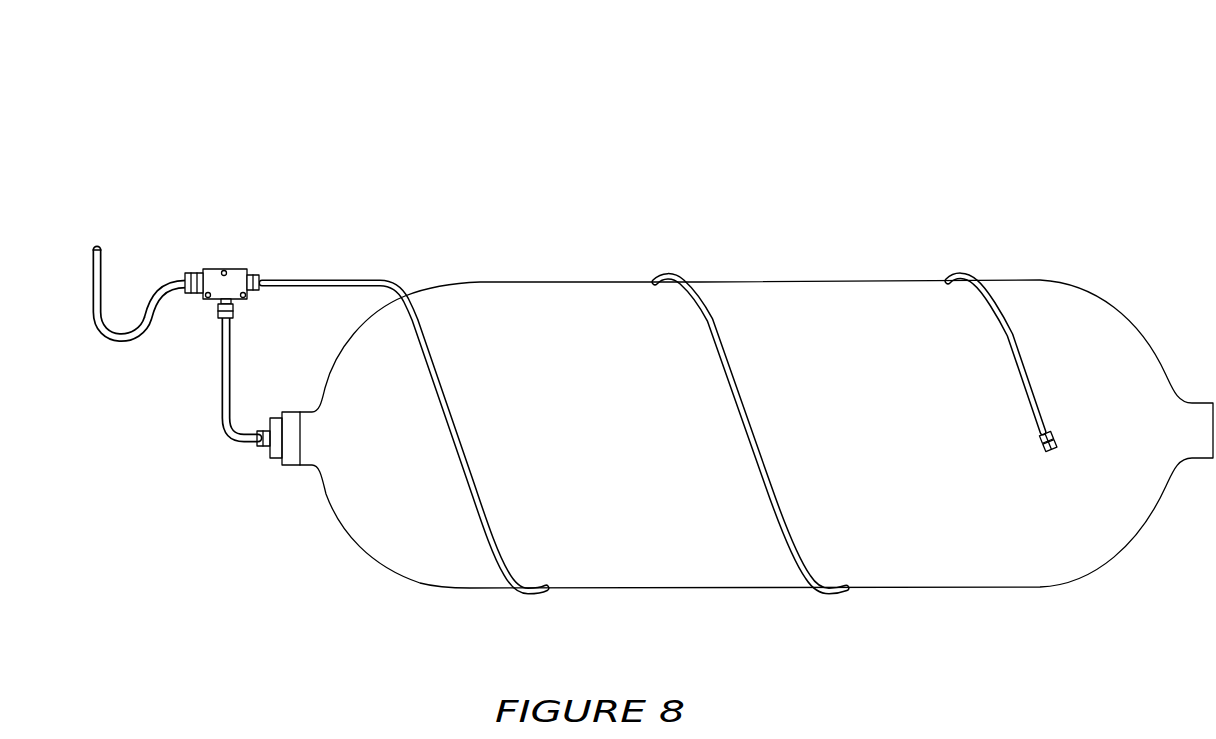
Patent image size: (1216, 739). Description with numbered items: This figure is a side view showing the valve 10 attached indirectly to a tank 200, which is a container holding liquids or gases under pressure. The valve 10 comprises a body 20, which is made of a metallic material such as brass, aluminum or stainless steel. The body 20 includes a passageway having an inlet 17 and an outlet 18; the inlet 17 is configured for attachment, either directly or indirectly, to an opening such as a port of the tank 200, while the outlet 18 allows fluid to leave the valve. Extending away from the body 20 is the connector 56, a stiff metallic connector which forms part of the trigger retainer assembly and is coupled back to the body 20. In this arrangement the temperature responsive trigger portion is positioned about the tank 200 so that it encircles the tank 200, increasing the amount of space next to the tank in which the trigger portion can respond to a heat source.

The valve 10 is at (220, 140).
The inlet 17 is at (235, 308).
The outlet 18 is at (191, 271).
The body 20 is at (234, 272).
The connector 56 is at (380, 279).
The tank 200 is at (978, 587).